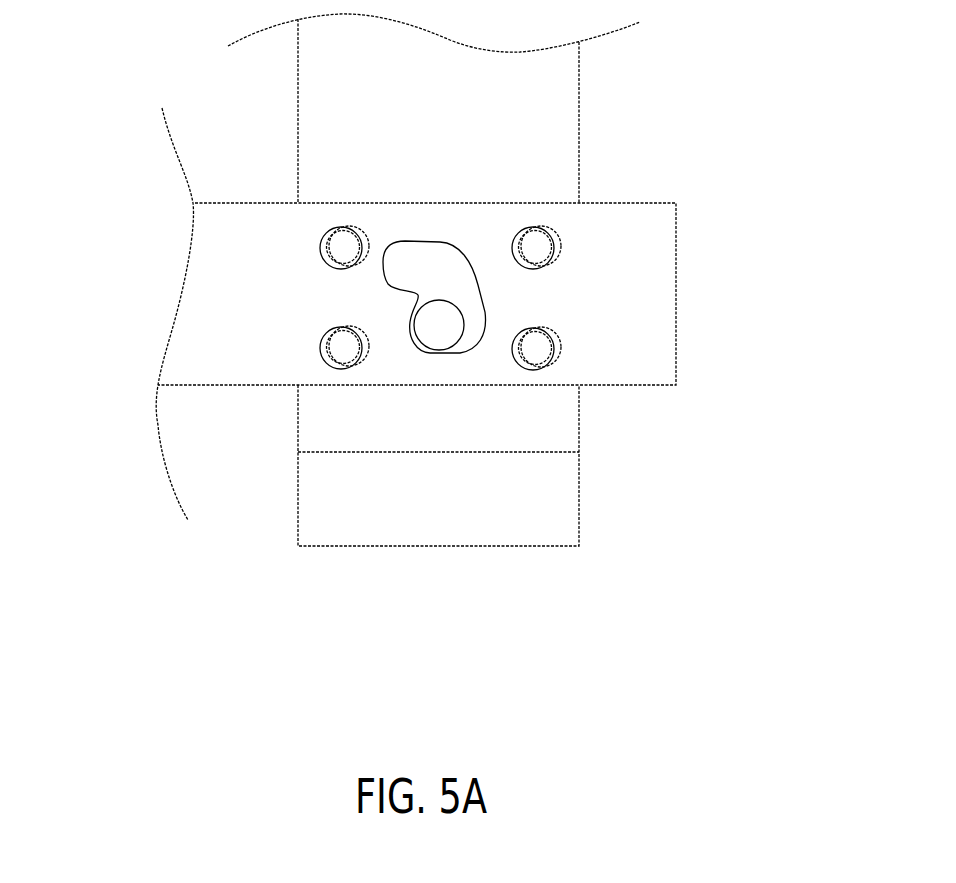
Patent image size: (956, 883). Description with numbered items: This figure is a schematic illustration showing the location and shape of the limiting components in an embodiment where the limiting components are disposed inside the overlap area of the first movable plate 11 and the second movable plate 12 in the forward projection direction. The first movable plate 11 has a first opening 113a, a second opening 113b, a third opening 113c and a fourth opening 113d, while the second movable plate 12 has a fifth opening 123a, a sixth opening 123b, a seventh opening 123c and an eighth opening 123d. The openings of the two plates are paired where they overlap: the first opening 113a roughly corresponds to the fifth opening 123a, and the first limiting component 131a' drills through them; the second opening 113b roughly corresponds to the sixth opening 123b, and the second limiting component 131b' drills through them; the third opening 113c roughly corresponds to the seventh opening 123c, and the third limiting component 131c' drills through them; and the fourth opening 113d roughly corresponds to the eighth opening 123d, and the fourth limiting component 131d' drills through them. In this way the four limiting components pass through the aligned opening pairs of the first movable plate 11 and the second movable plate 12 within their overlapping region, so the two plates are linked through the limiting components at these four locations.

The first movable plate 11 is at (437, 535).
The second movable plate 12 is at (663, 305).
The first opening 113a is at (325, 262).
The second opening 113b is at (558, 250).
The third opening 113c is at (317, 348).
The fourth opening 113d is at (556, 351).
The fifth opening 123a is at (330, 232).
The sixth opening 123b is at (533, 230).
The seventh opening 123c is at (345, 370).
The eighth opening 123d is at (543, 368).
The first limiting component 131a' is at (226, 227).
The second limiting component 131b' is at (592, 212).
The third limiting component 131c' is at (284, 441).
The fourth limiting component 131d' is at (637, 383).